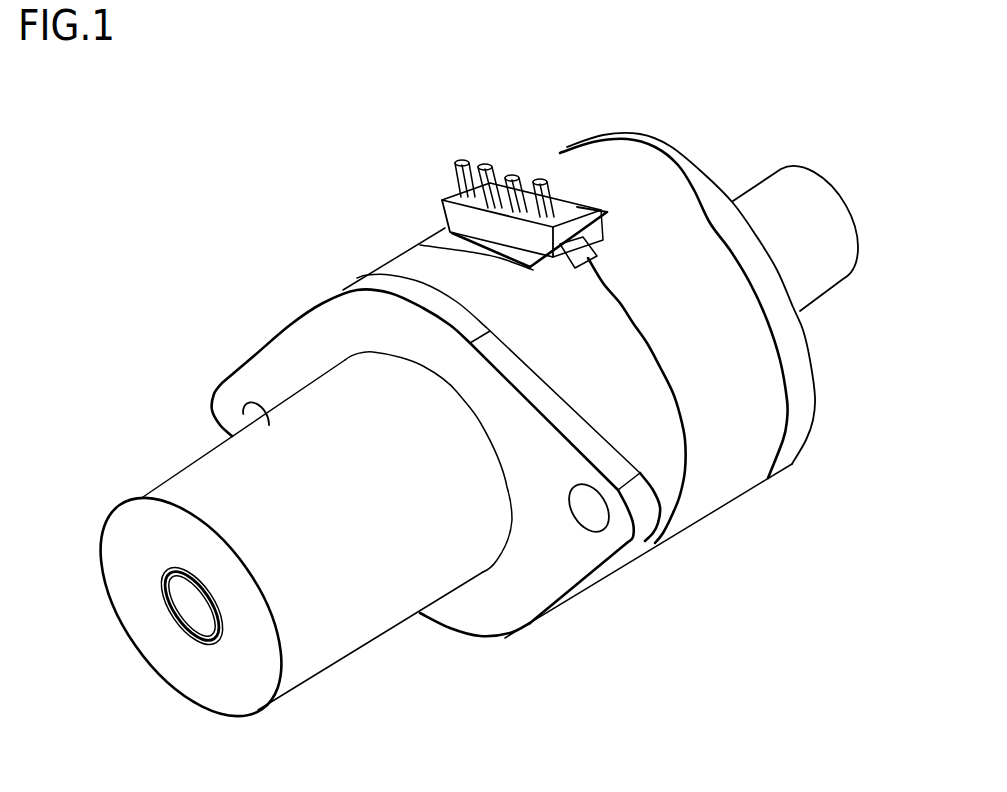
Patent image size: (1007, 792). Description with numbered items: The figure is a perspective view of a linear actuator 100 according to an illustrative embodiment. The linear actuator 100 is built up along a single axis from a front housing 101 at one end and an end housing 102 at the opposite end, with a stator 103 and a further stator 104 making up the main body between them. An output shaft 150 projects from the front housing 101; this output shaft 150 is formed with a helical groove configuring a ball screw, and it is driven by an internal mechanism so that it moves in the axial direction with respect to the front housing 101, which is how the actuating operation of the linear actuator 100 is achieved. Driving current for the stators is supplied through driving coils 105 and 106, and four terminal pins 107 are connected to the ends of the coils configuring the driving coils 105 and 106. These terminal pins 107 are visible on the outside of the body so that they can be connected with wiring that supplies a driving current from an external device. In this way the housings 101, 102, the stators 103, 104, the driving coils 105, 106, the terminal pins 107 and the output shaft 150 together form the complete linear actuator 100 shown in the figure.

The linear actuator 100 is at (473, 414).
The front housing 101 is at (347, 633).
The end housing 102 is at (810, 278).
The stator 103 is at (423, 268).
The stator 104 is at (592, 167).
The driving coil 105 is at (445, 197).
The driving coil 106 is at (593, 220).
The terminal pins 107 is at (460, 158).
The output shaft 150 is at (198, 612).